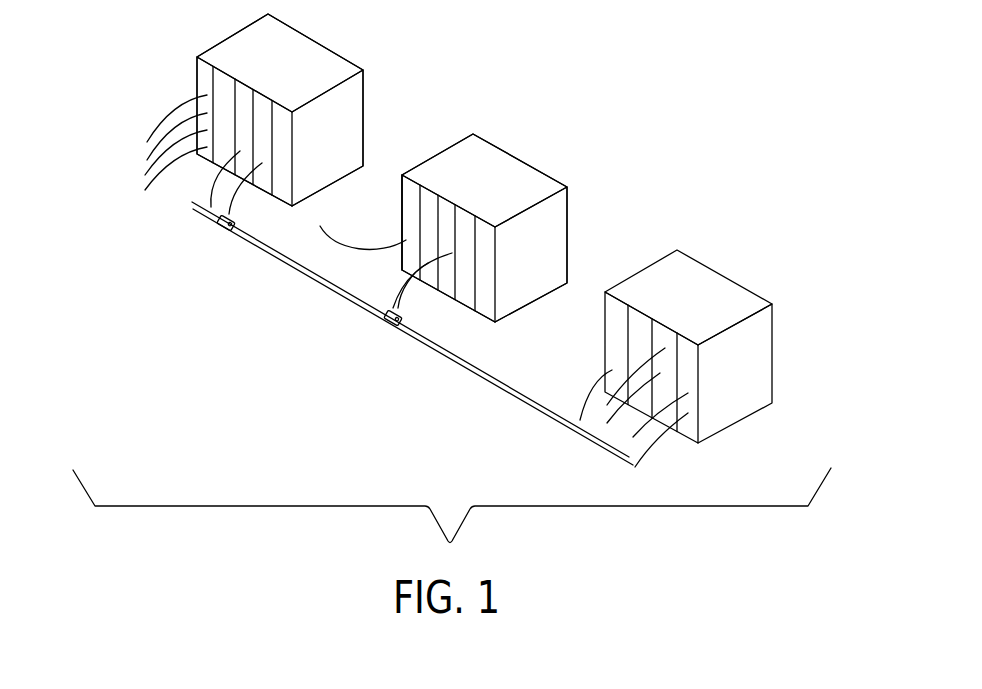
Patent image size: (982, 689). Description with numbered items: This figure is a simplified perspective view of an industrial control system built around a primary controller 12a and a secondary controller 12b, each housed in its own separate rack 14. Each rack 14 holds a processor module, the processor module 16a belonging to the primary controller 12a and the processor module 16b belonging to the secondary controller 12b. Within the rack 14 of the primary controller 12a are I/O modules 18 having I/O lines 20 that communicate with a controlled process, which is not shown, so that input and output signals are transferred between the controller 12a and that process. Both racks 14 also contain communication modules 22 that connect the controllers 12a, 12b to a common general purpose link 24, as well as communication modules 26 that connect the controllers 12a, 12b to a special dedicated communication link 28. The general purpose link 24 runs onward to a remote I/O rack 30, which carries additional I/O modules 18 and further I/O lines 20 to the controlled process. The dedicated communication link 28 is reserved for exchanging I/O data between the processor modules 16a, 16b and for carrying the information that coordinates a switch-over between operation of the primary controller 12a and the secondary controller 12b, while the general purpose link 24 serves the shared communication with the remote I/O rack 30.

The primary controller 12a is at (288, 63).
The secondary controller 12b is at (472, 157).
The rack 14 is at (237, 33).
The processor module 16a is at (215, 229).
The processor module 16b is at (386, 302).
The I/O module 18 is at (197, 80).
The I/O line 20 is at (146, 173).
The communication module 22 is at (272, 220).
The general purpose link 24 is at (520, 401).
The communication module 26 is at (402, 198).
The dedicated communication link 28 is at (293, 206).
The I/O rack 30 is at (690, 282).